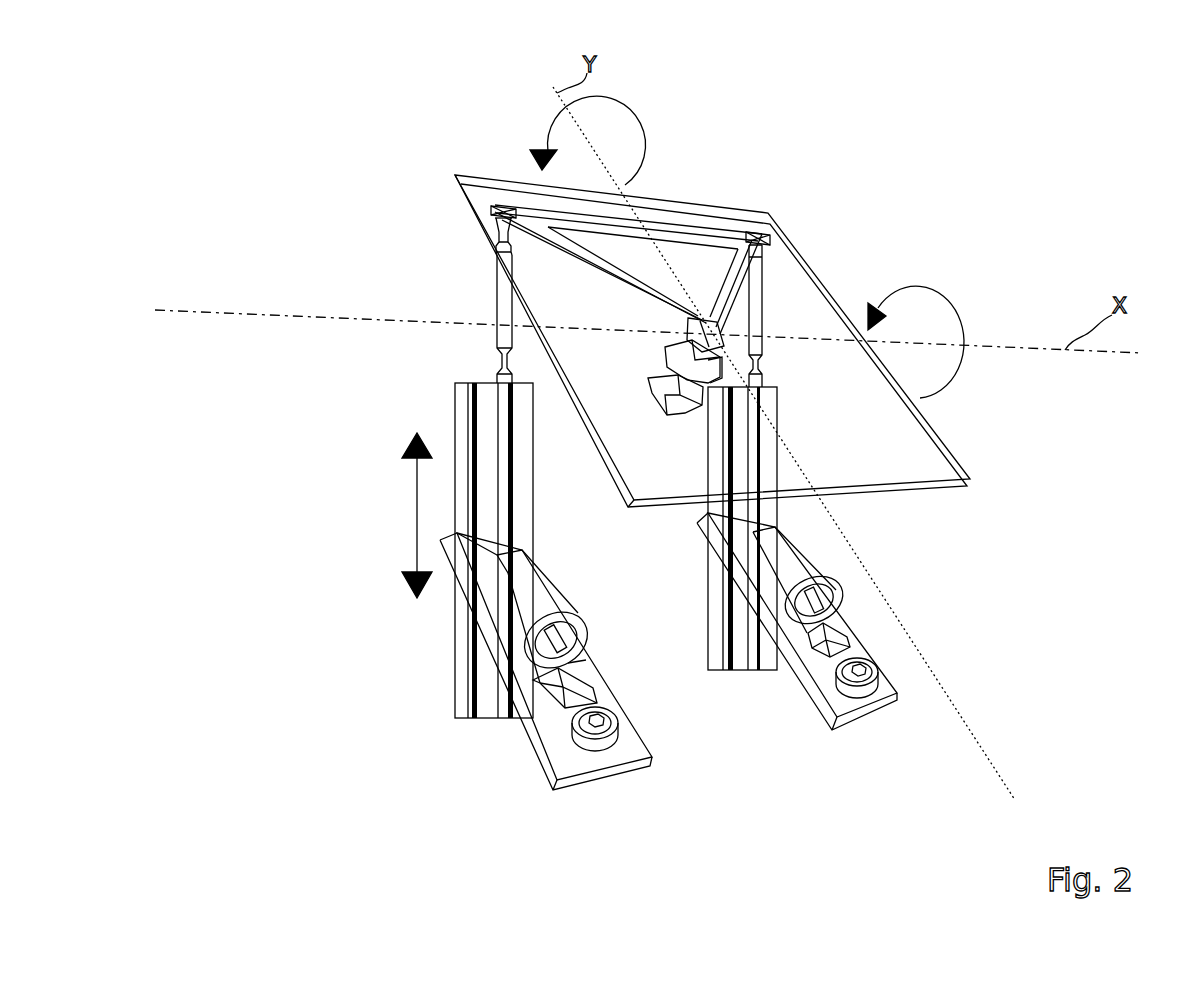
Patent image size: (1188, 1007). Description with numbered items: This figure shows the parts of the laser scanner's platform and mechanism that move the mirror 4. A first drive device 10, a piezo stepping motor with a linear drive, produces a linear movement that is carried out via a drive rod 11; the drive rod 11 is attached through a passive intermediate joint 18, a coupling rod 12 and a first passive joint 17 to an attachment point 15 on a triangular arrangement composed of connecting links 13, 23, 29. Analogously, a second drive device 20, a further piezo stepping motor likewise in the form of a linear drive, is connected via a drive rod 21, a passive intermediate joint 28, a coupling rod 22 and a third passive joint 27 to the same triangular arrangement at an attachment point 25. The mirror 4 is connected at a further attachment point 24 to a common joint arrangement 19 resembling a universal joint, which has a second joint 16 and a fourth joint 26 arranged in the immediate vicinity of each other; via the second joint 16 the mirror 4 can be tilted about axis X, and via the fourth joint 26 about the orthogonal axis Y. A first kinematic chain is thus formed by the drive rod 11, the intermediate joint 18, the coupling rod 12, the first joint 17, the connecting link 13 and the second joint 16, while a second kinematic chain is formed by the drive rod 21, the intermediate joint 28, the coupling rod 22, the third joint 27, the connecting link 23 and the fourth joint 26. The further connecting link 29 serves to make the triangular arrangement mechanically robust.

The mirror 4 is at (858, 460).
The first drive device 10 is at (537, 602).
The drive rod 11 is at (500, 418).
The coupling rod 12 is at (417, 300).
The connecting link 13 is at (628, 230).
The attachment point 15 is at (491, 211).
The second joint 16 is at (667, 363).
The first passive joint 17 is at (498, 234).
The passive intermediate joint 18 is at (501, 354).
The common joint arrangement 19 is at (712, 367).
The second drive device 20 is at (840, 603).
The drive rod 21 is at (755, 452).
The coupling rod 22 is at (813, 258).
The connecting link 23 is at (728, 277).
The further attachment point 24 is at (703, 327).
The attachment point 25 is at (762, 234).
The fourth joint 26 is at (685, 340).
The third passive joint 27 is at (760, 268).
The passive intermediate joint 28 is at (762, 363).
The further connecting link 29 is at (658, 208).